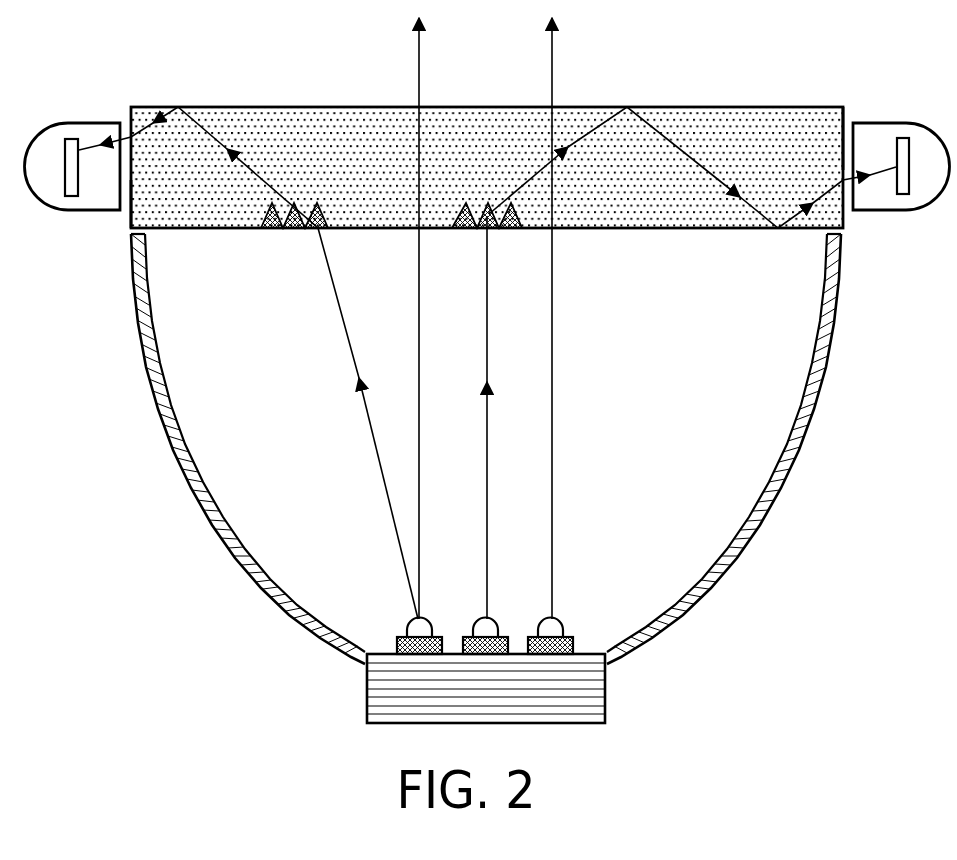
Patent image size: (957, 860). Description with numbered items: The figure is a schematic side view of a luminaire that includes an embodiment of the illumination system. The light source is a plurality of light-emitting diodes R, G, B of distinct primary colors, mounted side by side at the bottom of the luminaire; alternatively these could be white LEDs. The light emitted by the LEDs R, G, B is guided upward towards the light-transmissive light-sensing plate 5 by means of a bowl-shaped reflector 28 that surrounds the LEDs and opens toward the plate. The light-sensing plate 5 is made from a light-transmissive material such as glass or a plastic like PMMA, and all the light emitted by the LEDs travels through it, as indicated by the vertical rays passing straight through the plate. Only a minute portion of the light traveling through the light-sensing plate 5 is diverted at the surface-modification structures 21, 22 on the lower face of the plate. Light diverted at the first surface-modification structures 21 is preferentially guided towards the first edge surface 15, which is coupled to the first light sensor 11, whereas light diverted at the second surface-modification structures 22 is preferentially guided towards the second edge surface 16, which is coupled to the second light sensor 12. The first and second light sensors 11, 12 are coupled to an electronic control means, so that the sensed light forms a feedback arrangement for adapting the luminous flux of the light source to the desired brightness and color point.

The light-sensing plate 5 is at (706, 116).
The first light sensor 11 is at (905, 195).
The second light sensor 12 is at (73, 197).
The first edge surface 15 is at (842, 147).
The second edge surface 16 is at (133, 206).
The first surface-modification structures 21 is at (293, 186).
The second surface-modification structures 22 is at (487, 186).
The reflector 28 is at (206, 512).
The red light-emitting diode R is at (408, 624).
The green light-emitting diode G is at (496, 623).
The blue light-emitting diode B is at (563, 623).